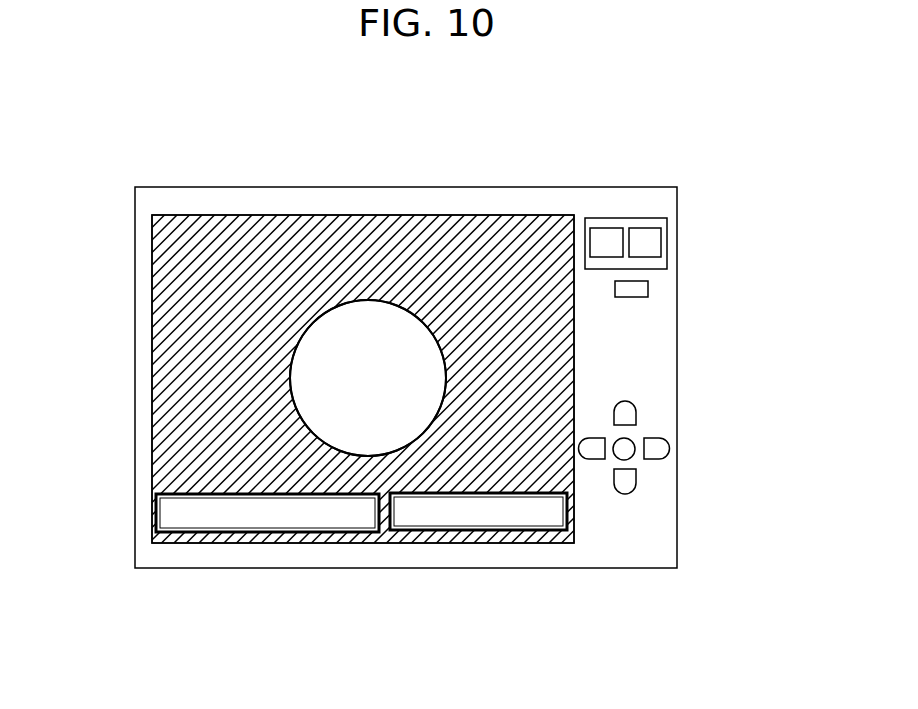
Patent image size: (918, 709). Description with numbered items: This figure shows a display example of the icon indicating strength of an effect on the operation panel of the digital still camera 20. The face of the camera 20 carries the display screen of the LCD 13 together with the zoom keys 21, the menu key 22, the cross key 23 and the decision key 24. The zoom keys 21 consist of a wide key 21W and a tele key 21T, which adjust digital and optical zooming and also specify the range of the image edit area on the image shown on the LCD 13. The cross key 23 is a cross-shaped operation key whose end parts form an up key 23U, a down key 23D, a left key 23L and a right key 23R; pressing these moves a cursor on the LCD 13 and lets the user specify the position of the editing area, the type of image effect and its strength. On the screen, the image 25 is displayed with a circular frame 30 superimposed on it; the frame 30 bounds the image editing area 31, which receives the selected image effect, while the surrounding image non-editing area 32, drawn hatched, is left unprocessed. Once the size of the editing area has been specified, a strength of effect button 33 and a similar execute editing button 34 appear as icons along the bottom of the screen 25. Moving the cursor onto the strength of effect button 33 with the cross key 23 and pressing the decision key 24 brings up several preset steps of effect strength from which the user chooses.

The LCD 13 is at (182, 215).
The digital still camera 20 is at (565, 187).
The zoom keys 21 is at (707, 234).
The wide key 21W is at (607, 228).
The tele key 21T is at (661, 237).
The menu key 22 is at (648, 288).
The cross key 23 is at (706, 449).
The up key 23U is at (637, 413).
The left key 23L is at (603, 439).
The right key 23R is at (670, 448).
The down key 23D is at (637, 479).
The decision key 24 is at (616, 459).
The image 25 is at (239, 236).
The frame 30 is at (290, 377).
The image editing area 31 is at (343, 318).
The image non-editing area 32 is at (432, 228).
The strength of effect button 33 is at (205, 543).
The execute editing button 34 is at (425, 543).